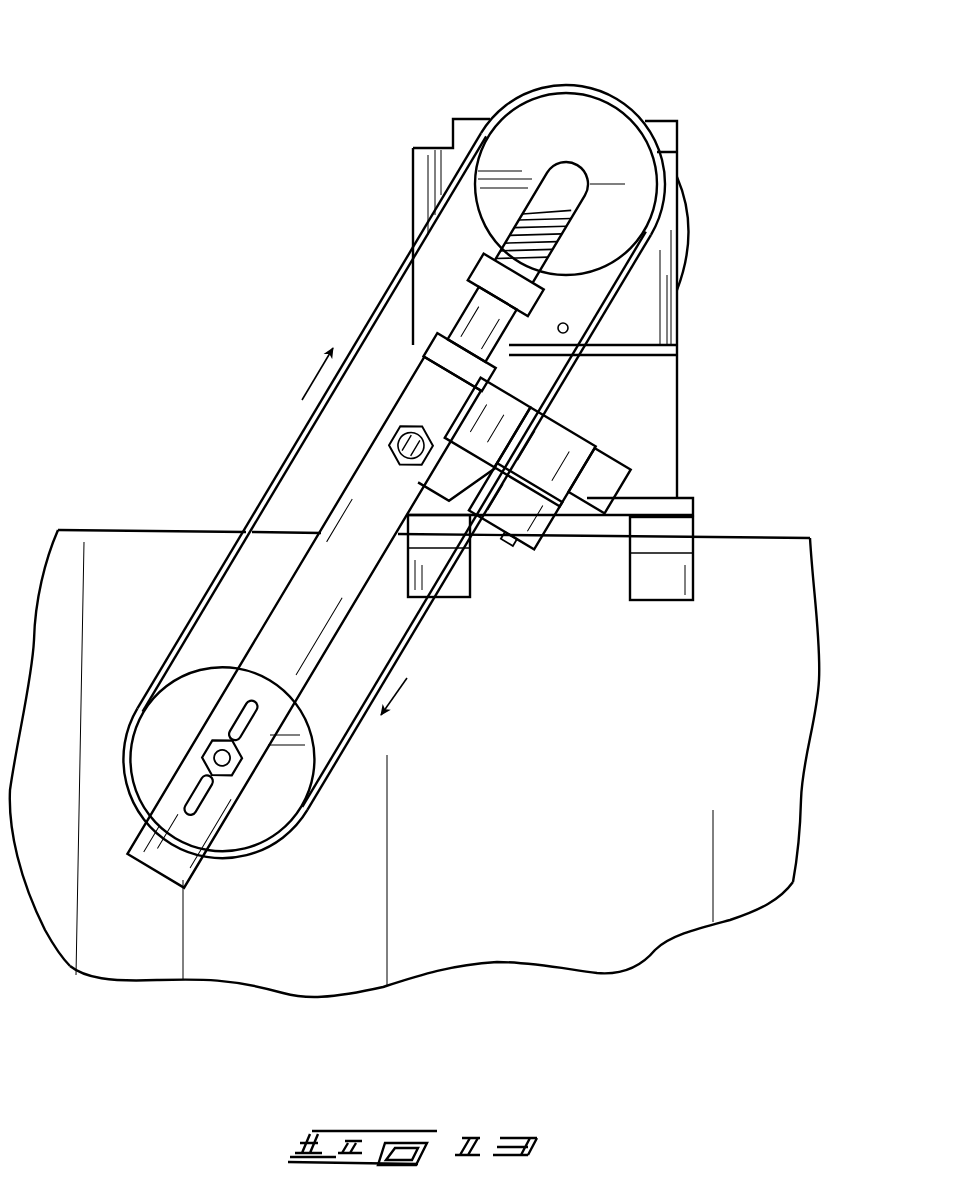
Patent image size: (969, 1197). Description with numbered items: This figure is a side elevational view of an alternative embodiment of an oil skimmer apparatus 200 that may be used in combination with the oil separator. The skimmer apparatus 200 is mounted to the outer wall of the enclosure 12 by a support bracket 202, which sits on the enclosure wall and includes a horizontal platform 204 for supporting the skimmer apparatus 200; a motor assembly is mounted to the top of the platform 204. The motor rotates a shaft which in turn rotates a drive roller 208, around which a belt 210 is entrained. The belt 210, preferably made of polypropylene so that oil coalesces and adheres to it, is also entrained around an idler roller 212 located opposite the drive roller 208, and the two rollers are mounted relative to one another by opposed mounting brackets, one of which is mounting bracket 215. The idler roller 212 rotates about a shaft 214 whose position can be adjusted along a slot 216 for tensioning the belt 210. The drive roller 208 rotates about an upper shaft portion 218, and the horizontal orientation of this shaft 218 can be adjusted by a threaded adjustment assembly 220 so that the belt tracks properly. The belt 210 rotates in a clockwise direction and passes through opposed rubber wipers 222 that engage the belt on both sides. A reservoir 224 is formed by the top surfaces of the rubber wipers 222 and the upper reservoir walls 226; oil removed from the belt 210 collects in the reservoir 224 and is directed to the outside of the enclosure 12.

The enclosure 12 is at (796, 535).
The skimmer apparatus 200 is at (222, 262).
The support bracket 202 is at (699, 506).
The horizontal platform 204 is at (684, 500).
The drive roller 208 is at (536, 140).
The belt 210 is at (263, 503).
The idler roller 212 is at (272, 798).
The shaft 214 is at (216, 757).
The mounting bracket 215 is at (297, 628).
The slot 216 is at (212, 788).
The upper shaft portion 218 is at (568, 181).
The threaded adjustment assembly 220 is at (463, 258).
The rubber wipers 222 is at (507, 518).
The reservoir 224 is at (566, 453).
The upper reservoir walls 226 is at (473, 421).